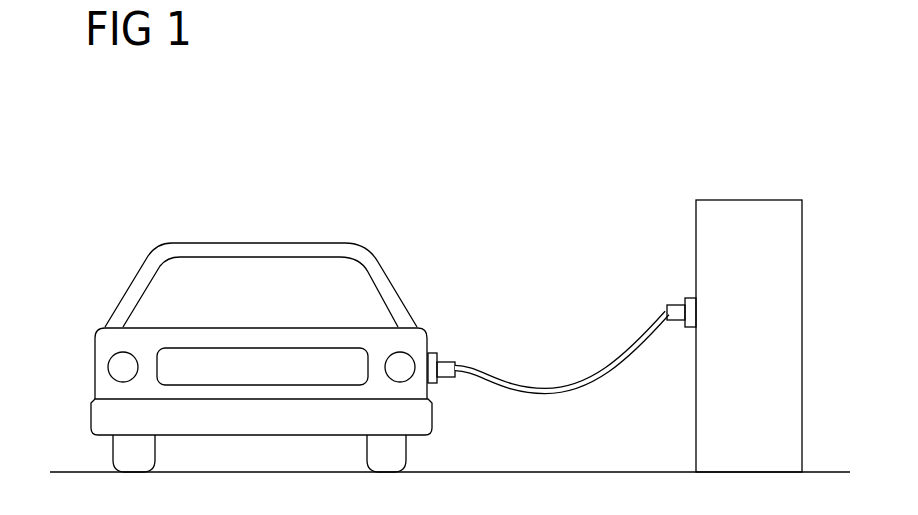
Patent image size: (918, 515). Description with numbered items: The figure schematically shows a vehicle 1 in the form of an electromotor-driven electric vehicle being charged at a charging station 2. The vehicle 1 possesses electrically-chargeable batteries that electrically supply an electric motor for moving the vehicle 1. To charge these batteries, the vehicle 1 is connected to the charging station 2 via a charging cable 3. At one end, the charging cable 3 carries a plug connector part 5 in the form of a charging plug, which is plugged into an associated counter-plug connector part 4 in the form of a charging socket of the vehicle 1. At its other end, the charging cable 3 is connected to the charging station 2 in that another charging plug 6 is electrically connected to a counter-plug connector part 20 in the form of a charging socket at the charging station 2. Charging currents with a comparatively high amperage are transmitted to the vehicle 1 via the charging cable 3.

The vehicle 1 is at (358, 215).
The charging station 2 is at (763, 177).
The charging cable 3 is at (558, 358).
The counter-plug connector part 4 is at (433, 350).
The plug connector part 5 is at (455, 378).
The charging plug 6 is at (672, 305).
The counter-plug connector part 20 is at (690, 328).